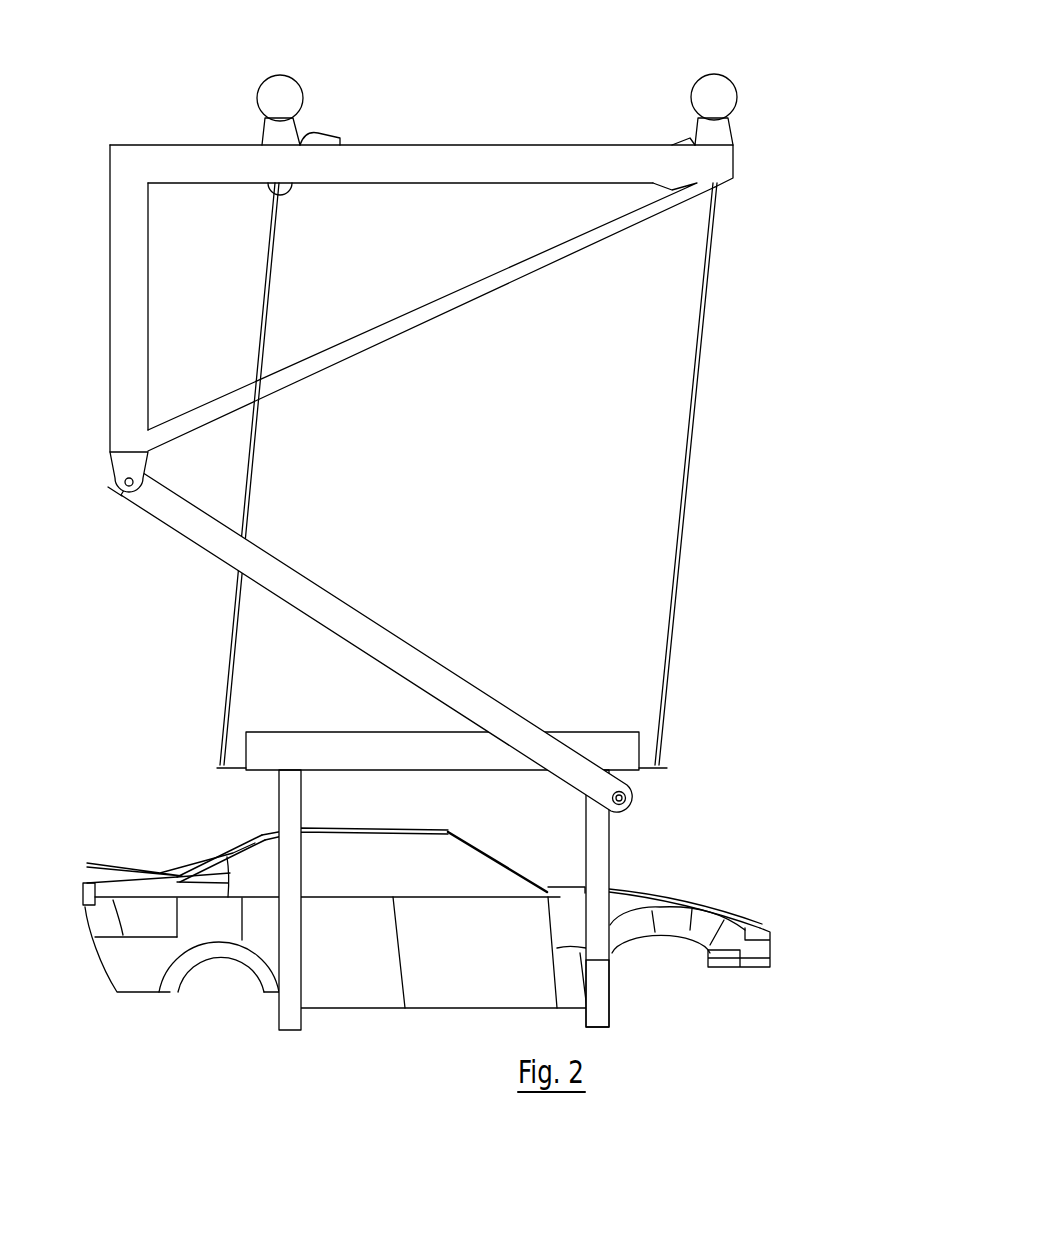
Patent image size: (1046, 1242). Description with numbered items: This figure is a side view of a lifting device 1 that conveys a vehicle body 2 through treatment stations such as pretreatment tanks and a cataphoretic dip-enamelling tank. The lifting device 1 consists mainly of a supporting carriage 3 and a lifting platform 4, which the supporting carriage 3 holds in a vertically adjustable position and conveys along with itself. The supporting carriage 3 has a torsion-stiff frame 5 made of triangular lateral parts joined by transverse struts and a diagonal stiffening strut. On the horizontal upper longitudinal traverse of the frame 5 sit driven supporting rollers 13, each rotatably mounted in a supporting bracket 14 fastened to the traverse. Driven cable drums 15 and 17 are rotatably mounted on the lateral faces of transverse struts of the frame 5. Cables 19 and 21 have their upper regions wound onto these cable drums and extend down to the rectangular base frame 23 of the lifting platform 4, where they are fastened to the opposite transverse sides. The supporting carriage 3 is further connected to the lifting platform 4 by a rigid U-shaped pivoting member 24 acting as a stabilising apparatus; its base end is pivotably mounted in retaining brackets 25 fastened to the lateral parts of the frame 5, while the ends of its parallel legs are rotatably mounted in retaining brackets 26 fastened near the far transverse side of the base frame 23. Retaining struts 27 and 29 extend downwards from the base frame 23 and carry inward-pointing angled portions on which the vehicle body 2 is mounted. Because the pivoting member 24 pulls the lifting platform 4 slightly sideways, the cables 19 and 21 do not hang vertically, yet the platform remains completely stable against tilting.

The lifting device 1 is at (423, 413).
The vehicle body 2 is at (124, 975).
The supporting carriage 3 is at (146, 133).
The lifting platform 4 is at (620, 845).
The frame 5 is at (488, 160).
The supporting roller 13 is at (278, 95).
The supporting bracket 14 is at (276, 133).
The cable drum 15 is at (312, 137).
The cable drum 17 is at (682, 138).
The cable 19 is at (255, 458).
The cable 21 is at (690, 452).
The base frame 23 is at (318, 748).
The pivoting member 24 is at (374, 615).
The retaining bracket 25 is at (120, 465).
The retaining bracket 26 is at (630, 775).
The retaining strut 27 is at (282, 798).
The retaining strut 29 is at (597, 993).